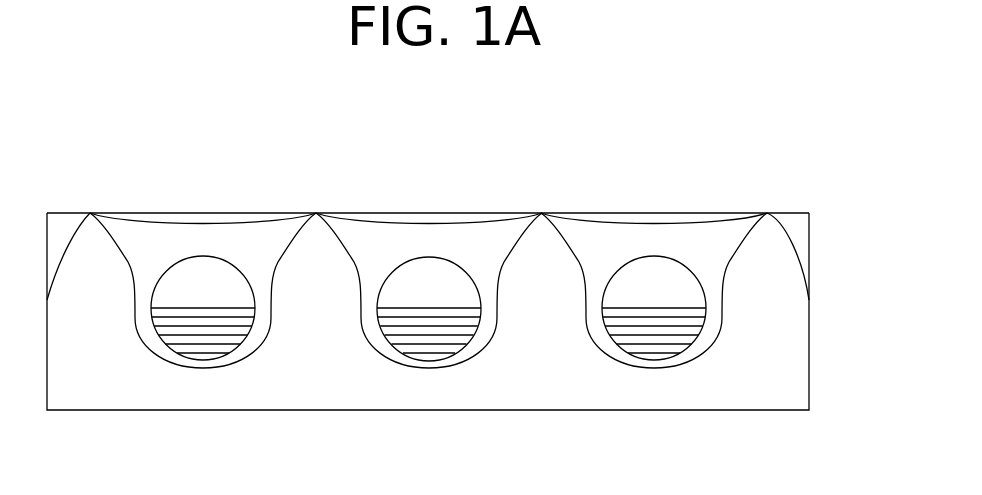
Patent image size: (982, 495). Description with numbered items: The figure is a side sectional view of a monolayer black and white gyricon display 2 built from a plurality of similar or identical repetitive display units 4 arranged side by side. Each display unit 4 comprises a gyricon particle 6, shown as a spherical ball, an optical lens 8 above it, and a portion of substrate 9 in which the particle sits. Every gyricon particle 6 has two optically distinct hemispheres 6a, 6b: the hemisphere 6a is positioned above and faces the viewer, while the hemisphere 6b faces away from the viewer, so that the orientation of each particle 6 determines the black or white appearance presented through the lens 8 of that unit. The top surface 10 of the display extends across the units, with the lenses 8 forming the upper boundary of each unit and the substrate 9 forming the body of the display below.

The gyricon display 2 is at (87, 178).
The display unit 4 is at (637, 368).
The gyricon particle 6 is at (233, 263).
The hemisphere 6a is at (202, 273).
The hemisphere 6b is at (185, 337).
The optical lens 8 is at (163, 224).
The substrate 9 is at (793, 377).
The top surface 10 is at (593, 213).